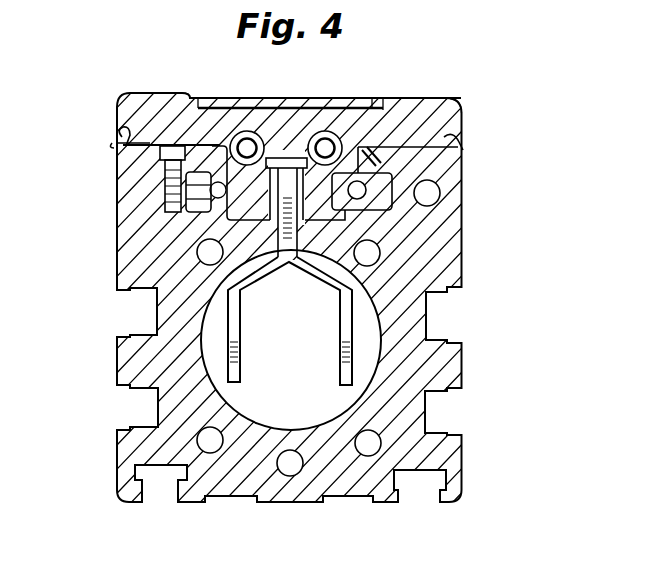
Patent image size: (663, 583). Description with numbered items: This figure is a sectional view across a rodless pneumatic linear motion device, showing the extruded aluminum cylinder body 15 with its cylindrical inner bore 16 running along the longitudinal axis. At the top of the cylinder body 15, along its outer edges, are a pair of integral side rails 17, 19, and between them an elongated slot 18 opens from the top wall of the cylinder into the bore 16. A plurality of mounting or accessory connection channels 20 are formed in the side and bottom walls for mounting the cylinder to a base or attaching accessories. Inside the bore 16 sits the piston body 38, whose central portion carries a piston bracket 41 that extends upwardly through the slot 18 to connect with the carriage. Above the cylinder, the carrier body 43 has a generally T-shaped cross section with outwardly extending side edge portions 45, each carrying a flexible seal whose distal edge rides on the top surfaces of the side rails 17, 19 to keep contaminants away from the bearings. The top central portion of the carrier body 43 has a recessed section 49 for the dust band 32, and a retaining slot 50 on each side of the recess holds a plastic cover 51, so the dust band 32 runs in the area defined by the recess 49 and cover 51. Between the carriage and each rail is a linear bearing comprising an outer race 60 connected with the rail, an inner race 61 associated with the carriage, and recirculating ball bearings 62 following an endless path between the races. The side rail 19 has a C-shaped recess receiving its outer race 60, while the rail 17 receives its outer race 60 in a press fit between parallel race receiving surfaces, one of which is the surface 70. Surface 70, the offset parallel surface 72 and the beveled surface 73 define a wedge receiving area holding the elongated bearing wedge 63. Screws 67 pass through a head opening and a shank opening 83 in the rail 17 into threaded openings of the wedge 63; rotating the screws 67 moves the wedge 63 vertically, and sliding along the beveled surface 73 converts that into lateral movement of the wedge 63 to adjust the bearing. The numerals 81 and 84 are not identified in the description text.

The cylinder body 15 is at (395, 408).
The inner bore 16 is at (345, 527).
The side rail 17 is at (117, 176).
The elongated slot 18 is at (308, 214).
The side rail 19 is at (445, 158).
The mounting or accessory connection channels 20 is at (150, 317).
The dust band 32 is at (370, 100).
The piston body 38 is at (280, 333).
The piston bracket 41 is at (352, 288).
The carrier body 43 is at (383, 98).
The side edge portions 45 is at (150, 108).
The recessed section 49 is at (372, 97).
The retaining slot 50 is at (192, 100).
The plastic cover 51 is at (297, 104).
The outer race 60 is at (393, 190).
The inner race 61 is at (325, 131).
The recirculating ball bearings 62 is at (247, 146).
The bearing wedge 63 is at (183, 192).
The screws 67 is at (118, 124).
The race receiving surface 70 is at (162, 178).
The wedge receiving area surface 72 is at (180, 212).
The beveled wedge surface 73 is at (190, 202).
The hook 81 is at (461, 137).
The shank opening 83 is at (117, 161).
The plate 84 is at (400, 96).